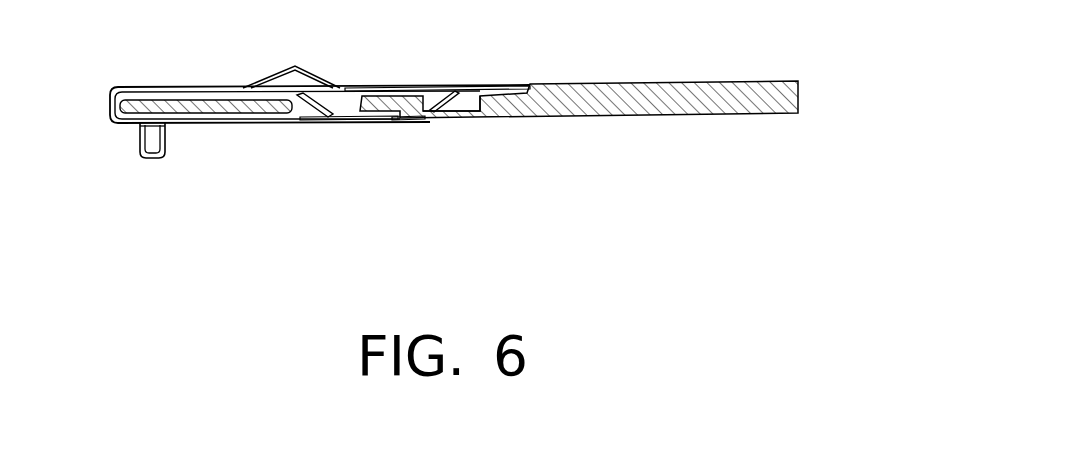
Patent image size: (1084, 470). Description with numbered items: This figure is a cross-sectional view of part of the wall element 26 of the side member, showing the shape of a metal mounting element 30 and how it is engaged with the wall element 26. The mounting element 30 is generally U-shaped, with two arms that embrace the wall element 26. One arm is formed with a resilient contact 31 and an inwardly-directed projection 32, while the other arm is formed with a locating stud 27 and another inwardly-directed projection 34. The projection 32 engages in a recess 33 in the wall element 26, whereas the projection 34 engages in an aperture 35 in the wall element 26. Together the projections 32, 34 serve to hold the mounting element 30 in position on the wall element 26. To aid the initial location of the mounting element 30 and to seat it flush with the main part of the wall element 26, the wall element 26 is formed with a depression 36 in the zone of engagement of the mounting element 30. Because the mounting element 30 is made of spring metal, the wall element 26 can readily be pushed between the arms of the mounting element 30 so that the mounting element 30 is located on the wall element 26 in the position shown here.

The wall element 26 is at (683, 100).
The locating stud 27 is at (165, 154).
The mounting element 30 is at (126, 87).
The resilient contact 31 is at (294, 68).
The inwardly-directed projection 32 is at (440, 92).
The recess 33 is at (471, 107).
The inwardly-directed projection 34 is at (305, 117).
The aperture 35 is at (356, 119).
The depression 36 is at (527, 86).